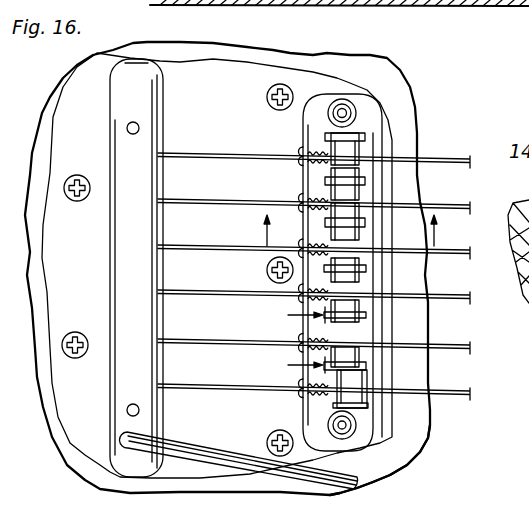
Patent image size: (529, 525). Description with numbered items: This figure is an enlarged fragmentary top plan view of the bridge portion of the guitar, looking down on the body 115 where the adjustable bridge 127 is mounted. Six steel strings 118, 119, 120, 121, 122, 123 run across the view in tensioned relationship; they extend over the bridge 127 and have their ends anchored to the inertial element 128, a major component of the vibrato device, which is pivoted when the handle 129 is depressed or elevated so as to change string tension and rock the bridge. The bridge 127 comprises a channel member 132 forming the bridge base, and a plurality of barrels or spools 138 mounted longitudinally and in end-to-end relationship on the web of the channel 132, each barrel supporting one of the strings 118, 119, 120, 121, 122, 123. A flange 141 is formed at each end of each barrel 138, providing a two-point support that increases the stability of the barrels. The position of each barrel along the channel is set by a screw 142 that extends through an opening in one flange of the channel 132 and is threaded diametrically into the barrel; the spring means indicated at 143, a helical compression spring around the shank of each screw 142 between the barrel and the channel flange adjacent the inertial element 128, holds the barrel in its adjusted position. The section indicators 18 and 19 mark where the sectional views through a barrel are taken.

The body 115 is at (318, 54).
The steel string 118 is at (470, 159).
The steel string 119 is at (476, 190).
The steel string 120 is at (458, 254).
The steel string 121 is at (457, 300).
The steel string 122 is at (457, 350).
The steel string 123 is at (457, 397).
The adjustable bridge 127 is at (372, 90).
The inertial element 128 is at (160, 101).
The handle 129 is at (376, 484).
The channel member 132 is at (408, 462).
The barrel or spool 138 is at (362, 196).
The flange 141 is at (347, 79).
The screw 142 is at (298, 148).
The saddle spring 143 is at (306, 164).
The section line of FIG. 18 is at (290, 343).
The section line of FIG. 19 is at (348, 228).